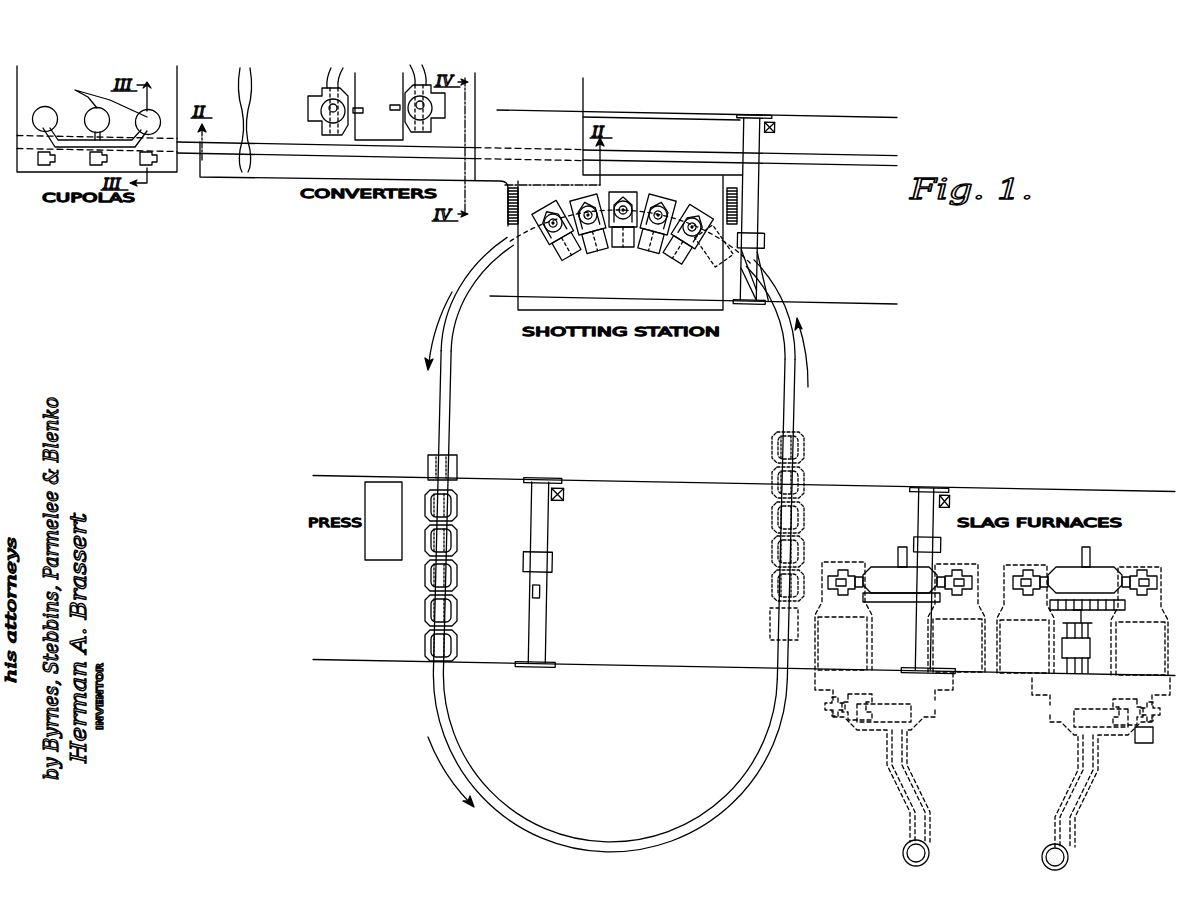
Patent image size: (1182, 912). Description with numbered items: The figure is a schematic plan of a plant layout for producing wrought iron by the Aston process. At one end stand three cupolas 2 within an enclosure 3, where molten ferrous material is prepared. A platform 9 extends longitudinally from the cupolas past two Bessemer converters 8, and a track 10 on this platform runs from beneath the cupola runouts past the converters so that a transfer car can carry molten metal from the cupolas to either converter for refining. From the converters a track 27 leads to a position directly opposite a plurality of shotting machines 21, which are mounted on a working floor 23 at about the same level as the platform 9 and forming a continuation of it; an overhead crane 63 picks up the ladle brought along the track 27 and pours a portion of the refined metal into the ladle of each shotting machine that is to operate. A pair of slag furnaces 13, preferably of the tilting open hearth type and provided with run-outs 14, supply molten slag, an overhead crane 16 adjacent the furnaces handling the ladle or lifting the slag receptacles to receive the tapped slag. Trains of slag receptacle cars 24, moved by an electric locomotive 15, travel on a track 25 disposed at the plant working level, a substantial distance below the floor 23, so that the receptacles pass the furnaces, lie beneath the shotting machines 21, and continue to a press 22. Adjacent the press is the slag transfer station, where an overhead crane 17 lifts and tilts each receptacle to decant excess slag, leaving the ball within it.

The cupolas 2 is at (48, 110).
The enclosure 3 is at (182, 165).
The Bessemer converters 8 is at (374, 122).
The platform 9 is at (305, 165).
The track 10 is at (262, 175).
The slag furnaces 13 is at (885, 578).
The run-outs 14 is at (897, 553).
The electric locomotive 15 is at (768, 625).
The overhead crane 16 is at (924, 510).
The overhead crane 17 is at (548, 527).
The shotting machines 21 is at (624, 193).
The press 22 is at (388, 553).
The working floor or platform 23 is at (760, 284).
The slag receptacle cars 24 is at (623, 248).
The track 25 is at (442, 413).
The track 27 is at (644, 160).
The overhead crane 63 is at (753, 196).